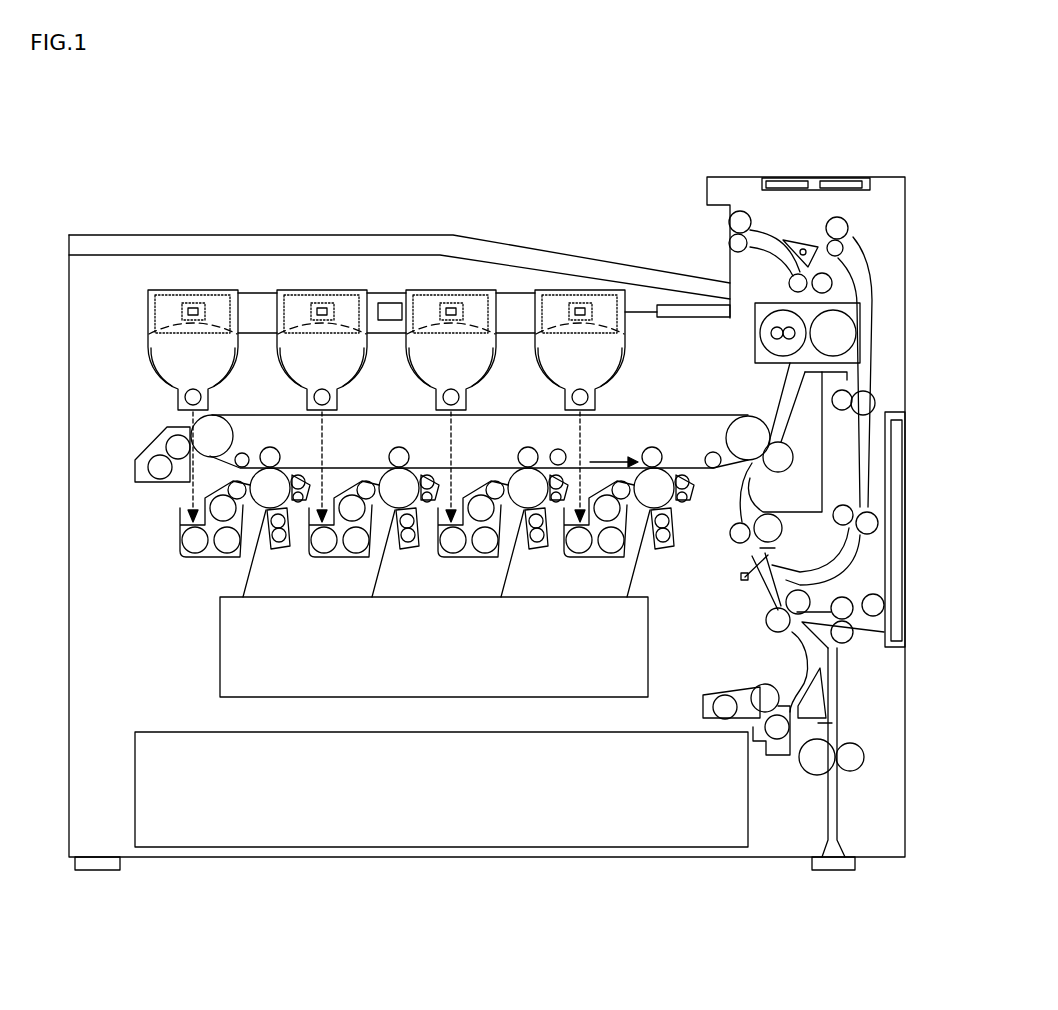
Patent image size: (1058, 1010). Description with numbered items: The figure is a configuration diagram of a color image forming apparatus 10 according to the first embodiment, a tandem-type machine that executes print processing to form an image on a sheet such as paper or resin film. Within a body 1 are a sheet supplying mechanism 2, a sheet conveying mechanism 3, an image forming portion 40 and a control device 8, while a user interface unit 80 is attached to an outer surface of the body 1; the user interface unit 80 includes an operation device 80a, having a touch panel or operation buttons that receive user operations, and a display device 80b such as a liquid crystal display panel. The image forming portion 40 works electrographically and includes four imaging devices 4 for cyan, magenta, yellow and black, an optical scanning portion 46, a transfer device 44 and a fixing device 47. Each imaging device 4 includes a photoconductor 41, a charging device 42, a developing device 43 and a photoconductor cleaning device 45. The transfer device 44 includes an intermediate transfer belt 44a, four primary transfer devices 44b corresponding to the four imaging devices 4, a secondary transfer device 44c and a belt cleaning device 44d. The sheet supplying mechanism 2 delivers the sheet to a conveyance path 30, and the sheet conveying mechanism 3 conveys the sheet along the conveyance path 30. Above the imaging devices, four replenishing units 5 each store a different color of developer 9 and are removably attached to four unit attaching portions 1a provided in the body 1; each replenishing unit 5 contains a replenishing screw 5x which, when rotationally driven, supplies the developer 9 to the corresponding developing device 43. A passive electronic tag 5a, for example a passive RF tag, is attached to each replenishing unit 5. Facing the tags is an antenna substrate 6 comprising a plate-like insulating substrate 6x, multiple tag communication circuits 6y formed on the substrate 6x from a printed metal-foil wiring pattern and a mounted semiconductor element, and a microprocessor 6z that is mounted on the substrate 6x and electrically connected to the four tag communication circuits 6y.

The image forming apparatus 10 is at (130, 183).
The body 1 is at (68, 492).
The unit attaching portion 1a is at (623, 352).
The sheet supplying mechanism 2 is at (760, 774).
The sheet conveying mechanism 3 is at (863, 726).
The imaging device 4 is at (264, 467).
The replenishing unit 5 is at (219, 287).
The electronic tag 5a is at (188, 306).
The replenishing screw 5x is at (184, 397).
The antenna substrate 6 is at (260, 288).
The substrate 6x is at (389, 322).
The tag communication circuit 6y is at (205, 303).
The microprocessor 6z is at (393, 303).
The control device 8 is at (688, 305).
The developer 9 is at (621, 328).
The conveyance path 30 is at (760, 612).
The image forming portion 40 is at (121, 453).
The photoconductor 41 is at (284, 551).
The charging device 42 is at (244, 506).
The developing device 43 is at (207, 560).
The transfer device 44 is at (786, 428).
The intermediate transfer belt 44a is at (679, 414).
The primary transfer device 44b is at (276, 455).
The secondary transfer device 44c is at (794, 464).
The belt cleaning device 44d is at (151, 483).
The photoconductor cleaning device 45 is at (304, 480).
The optical scanning portion 46 is at (652, 651).
The fixing device 47 is at (862, 327).
The user interface unit 80 is at (872, 184).
The operation device 80a is at (798, 177).
The display device 80b is at (848, 177).